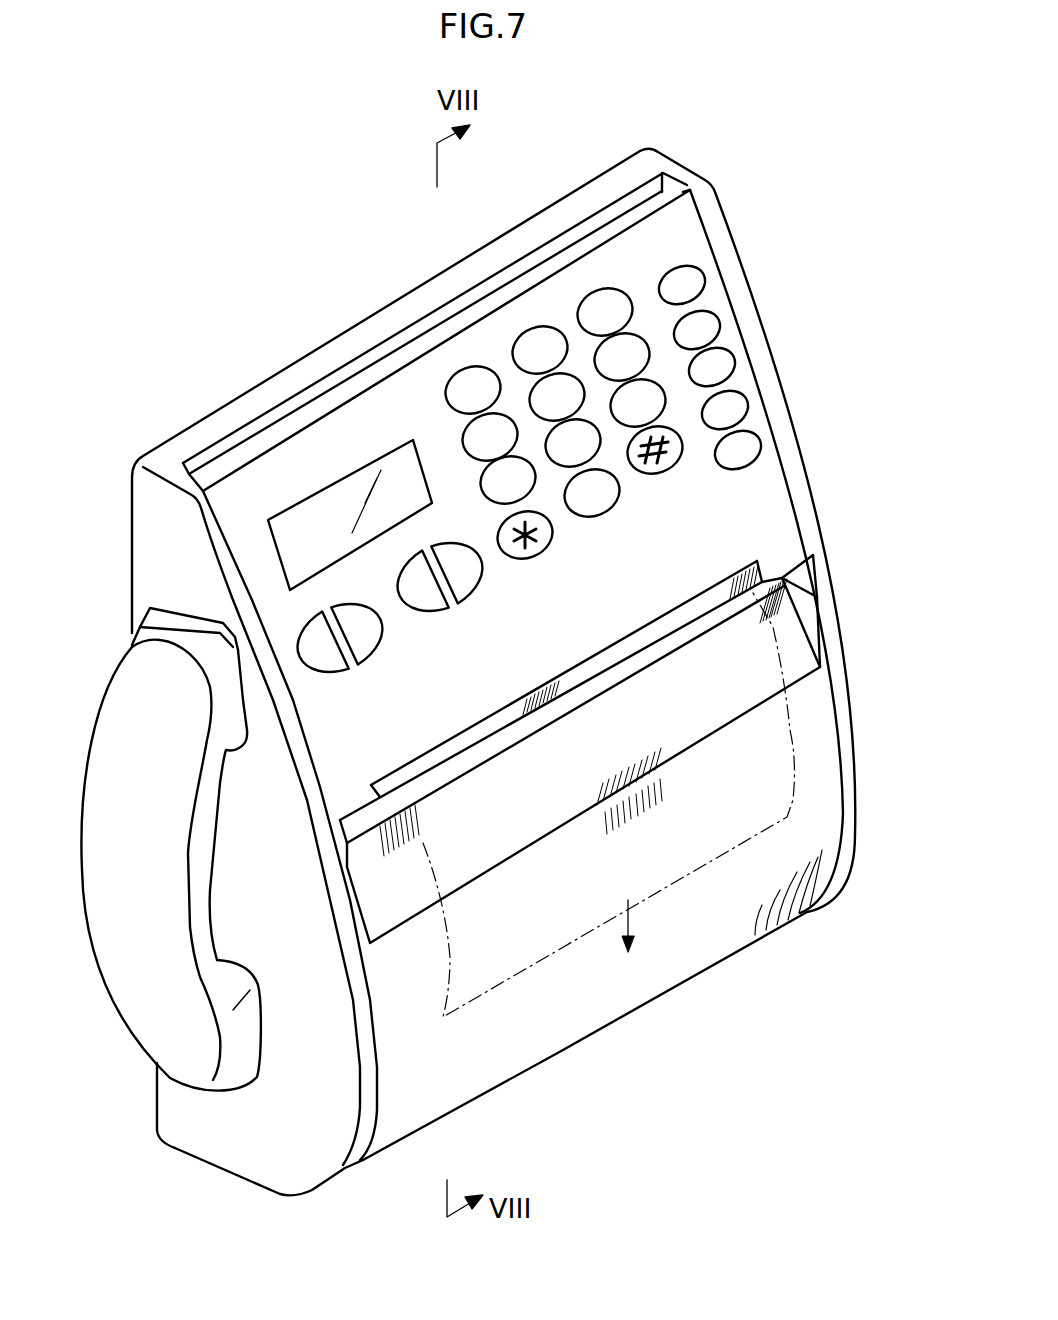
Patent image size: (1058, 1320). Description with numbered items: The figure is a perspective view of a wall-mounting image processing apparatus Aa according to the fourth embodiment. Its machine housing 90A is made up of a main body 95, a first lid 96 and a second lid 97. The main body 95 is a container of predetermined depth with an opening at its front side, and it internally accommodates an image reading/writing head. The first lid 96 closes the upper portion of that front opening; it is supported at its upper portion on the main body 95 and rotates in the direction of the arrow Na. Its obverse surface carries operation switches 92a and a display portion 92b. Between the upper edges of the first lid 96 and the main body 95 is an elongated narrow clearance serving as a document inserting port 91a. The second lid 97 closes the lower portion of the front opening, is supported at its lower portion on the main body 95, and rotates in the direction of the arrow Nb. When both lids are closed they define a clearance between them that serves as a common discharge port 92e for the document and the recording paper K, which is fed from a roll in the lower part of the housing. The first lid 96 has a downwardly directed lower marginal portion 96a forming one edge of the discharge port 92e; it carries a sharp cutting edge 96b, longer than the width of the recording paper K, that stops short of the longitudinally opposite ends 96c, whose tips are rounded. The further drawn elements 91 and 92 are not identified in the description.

The machine housing 90A is at (734, 240).
The top surface 91 is at (540, 232).
The document inserting port 91a is at (440, 323).
The front cover 92 is at (783, 462).
The operation switches 92a is at (310, 637).
The display portion 92b is at (288, 522).
The common discharge port 92e is at (500, 737).
The main body 95 is at (153, 508).
The first lid 96 is at (397, 397).
The lower marginal portion 96a is at (577, 677).
The cutting edge 96b is at (642, 660).
The longitudinally opposite ends 96c is at (773, 577).
The second lid 97 is at (813, 760).
The recording paper K is at (777, 790).
The wall-mounting image processing apparatus Aa is at (254, 316).
The arrow Na is at (783, 510).
The arrow Nb is at (721, 902).